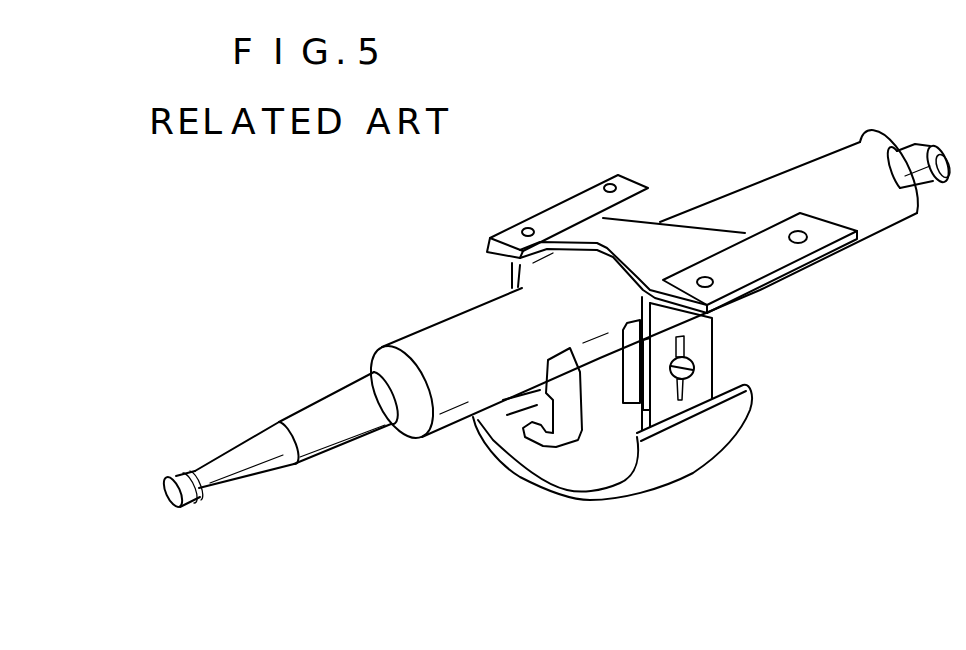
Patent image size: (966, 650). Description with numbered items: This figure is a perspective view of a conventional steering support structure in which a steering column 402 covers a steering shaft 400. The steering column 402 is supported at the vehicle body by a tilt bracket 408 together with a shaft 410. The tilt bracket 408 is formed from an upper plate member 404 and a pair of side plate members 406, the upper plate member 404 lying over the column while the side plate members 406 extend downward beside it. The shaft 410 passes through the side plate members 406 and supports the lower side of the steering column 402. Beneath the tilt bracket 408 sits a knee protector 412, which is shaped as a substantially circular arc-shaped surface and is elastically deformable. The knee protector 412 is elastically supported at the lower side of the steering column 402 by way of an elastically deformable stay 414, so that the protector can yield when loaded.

The steering shaft 400 is at (907, 163).
The steering column 402 is at (887, 218).
The upper plate member 404 is at (678, 245).
The side plate members 406 is at (512, 288).
The tilt bracket 408 is at (607, 166).
The shaft 410 is at (605, 362).
The knee protector 412 is at (672, 468).
The stay 414 is at (538, 445).